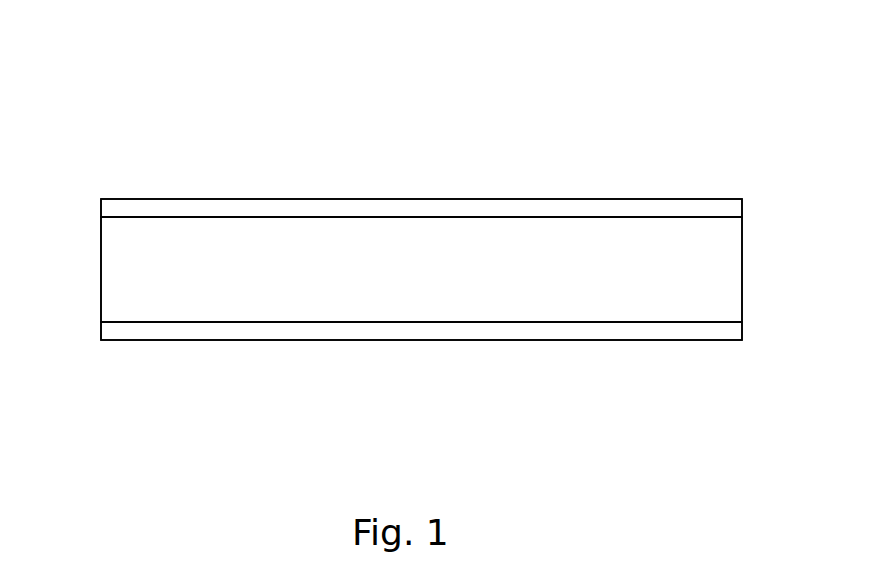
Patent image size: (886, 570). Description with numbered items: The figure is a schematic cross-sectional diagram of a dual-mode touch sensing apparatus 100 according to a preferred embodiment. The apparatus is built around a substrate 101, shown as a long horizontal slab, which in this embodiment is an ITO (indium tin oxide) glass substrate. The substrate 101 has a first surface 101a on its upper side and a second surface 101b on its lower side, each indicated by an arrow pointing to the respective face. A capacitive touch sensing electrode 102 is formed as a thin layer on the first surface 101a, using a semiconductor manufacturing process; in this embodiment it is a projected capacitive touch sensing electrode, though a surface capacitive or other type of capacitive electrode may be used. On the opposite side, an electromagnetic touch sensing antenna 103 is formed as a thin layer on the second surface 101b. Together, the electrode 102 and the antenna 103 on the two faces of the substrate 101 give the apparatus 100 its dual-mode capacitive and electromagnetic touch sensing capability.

The dual-mode touch sensing apparatus 100 is at (58, 40).
The substrate 101 is at (737, 268).
The first surface 101a is at (141, 216).
The second surface 101b is at (141, 323).
The capacitive touch sensing electrode 102 is at (737, 209).
The electromagnetic touch sensing antenna 103 is at (737, 330).